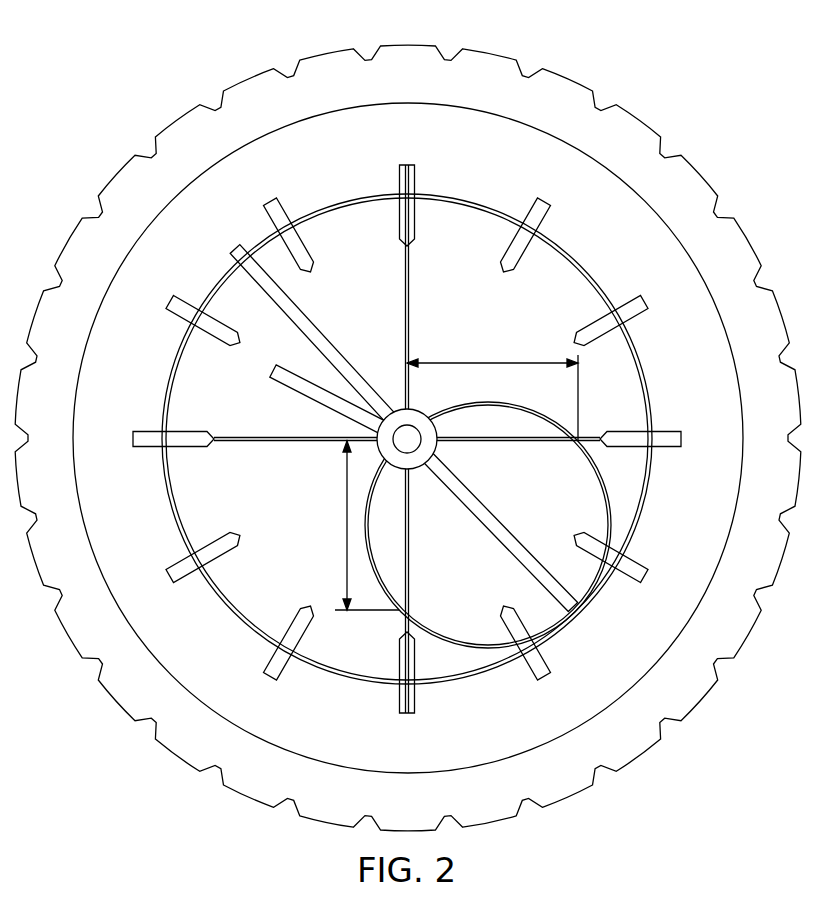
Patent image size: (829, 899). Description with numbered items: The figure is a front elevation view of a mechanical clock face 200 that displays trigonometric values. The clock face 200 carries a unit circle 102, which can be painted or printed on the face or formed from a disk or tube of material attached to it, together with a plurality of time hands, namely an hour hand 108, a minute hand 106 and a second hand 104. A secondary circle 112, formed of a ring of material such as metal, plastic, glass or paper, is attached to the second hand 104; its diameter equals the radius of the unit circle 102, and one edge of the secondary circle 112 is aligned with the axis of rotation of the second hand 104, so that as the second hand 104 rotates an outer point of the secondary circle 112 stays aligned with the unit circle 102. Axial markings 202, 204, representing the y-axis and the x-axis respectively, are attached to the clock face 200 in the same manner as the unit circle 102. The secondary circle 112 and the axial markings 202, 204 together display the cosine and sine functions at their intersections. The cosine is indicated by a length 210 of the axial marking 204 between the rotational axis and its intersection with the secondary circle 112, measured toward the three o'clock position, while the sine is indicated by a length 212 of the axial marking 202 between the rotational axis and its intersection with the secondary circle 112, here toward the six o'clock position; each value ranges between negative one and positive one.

The mechanical clock face 200 is at (176, 64).
The unit circle 102 is at (470, 197).
The second hand 104 is at (502, 538).
The minute hand 106 is at (315, 328).
The hour hand 108 is at (290, 396).
The secondary circle 112 is at (490, 402).
The axial marking 202 is at (408, 328).
The axial marking 204 is at (298, 444).
The length 210 is at (490, 363).
The length 212 is at (347, 524).